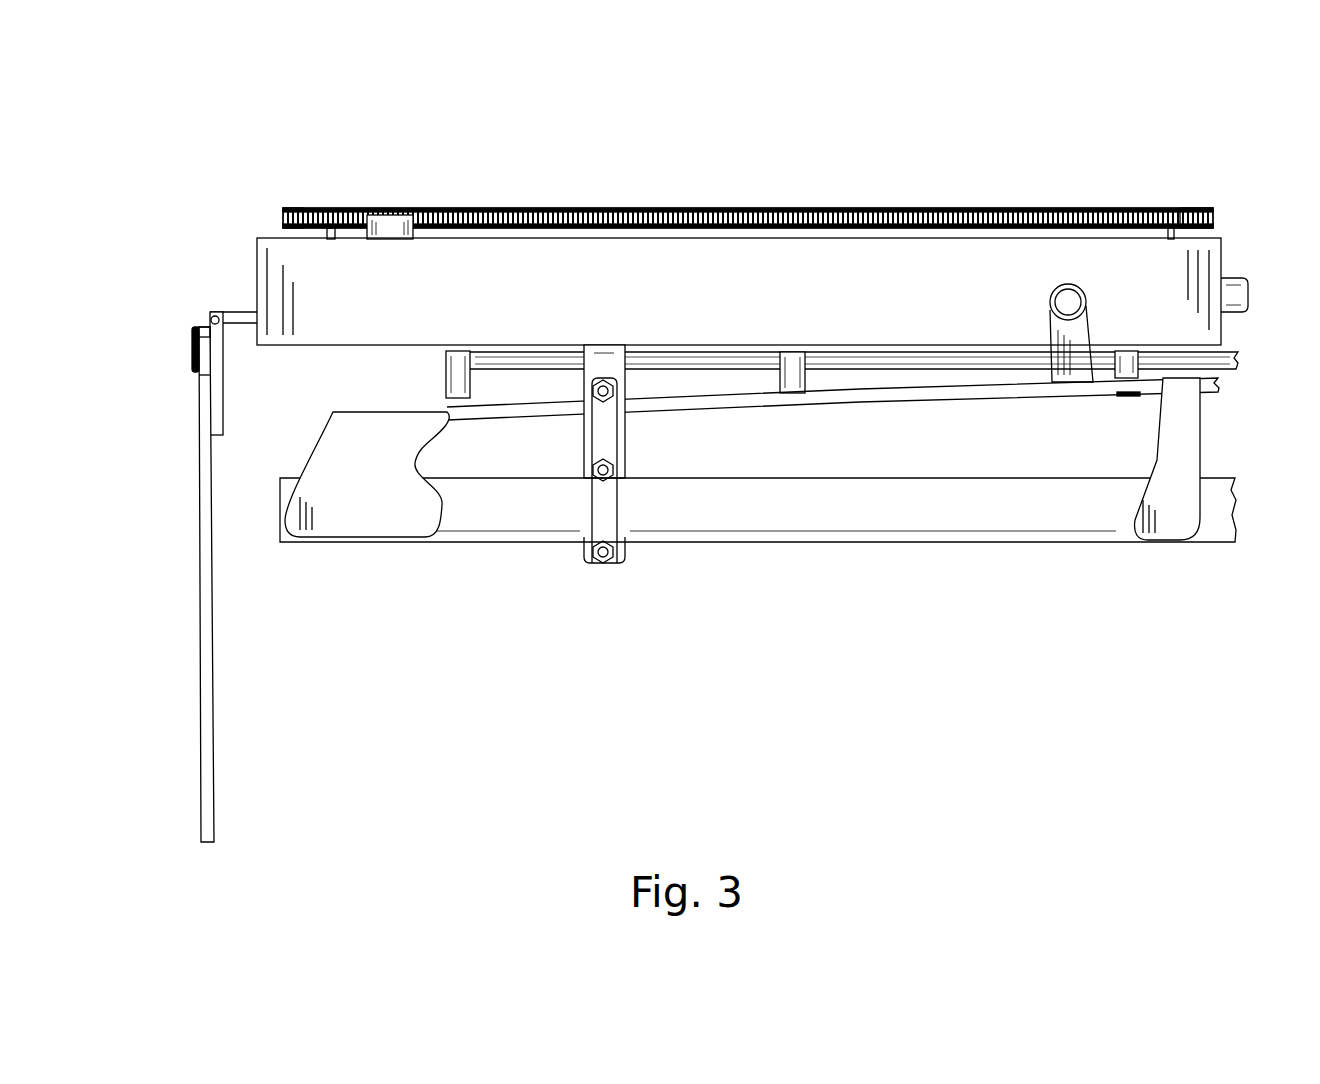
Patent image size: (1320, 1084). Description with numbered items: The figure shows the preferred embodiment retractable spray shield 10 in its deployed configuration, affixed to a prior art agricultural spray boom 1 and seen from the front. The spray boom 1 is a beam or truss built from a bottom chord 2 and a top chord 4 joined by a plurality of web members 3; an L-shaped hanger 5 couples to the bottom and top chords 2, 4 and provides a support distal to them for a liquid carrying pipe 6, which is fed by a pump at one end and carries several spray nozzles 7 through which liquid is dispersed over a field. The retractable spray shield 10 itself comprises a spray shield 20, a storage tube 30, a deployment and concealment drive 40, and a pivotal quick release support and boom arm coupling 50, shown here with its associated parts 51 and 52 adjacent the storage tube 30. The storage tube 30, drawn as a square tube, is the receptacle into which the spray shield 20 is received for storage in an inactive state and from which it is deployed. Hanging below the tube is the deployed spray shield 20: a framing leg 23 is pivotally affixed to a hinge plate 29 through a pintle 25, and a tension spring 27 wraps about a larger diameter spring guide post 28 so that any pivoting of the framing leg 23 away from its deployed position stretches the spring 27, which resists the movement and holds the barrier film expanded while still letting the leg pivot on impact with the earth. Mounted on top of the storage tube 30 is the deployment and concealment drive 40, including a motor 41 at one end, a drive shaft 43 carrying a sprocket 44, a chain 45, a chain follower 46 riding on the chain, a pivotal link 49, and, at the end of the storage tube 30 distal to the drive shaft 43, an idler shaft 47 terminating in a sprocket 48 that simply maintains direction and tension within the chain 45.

The agricultural spray boom 1 is at (802, 550).
The bottom chord 2 is at (1222, 520).
The web members 3 is at (360, 499).
The top chord 4 is at (1015, 395).
The L-shaped hanger 5 is at (615, 370).
The liquid carrying pipe 6 is at (860, 365).
The spray nozzles 7 is at (465, 382).
The retractable spray shield 10 is at (1190, 118).
The spray shield 20 is at (224, 765).
The framing leg 23 is at (205, 681).
The pintle 25 is at (197, 378).
The tension spring 27 is at (193, 350).
The spring guide post 28 is at (204, 330).
The hinge plate 29 is at (222, 418).
The storage tube 30 is at (603, 304).
The deployment and concealment drive 40 is at (364, 186).
The motor 41 is at (1230, 295).
The drive shaft 43 is at (1175, 233).
The sprocket 44 is at (1152, 210).
The chain 45 is at (526, 208).
The chain follower 46 is at (404, 232).
The idler shaft 47 is at (330, 233).
The sprocket 48 is at (292, 208).
The pivotal link 49 is at (246, 318).
The pivotal quick release support and boom arm coupling 50 is at (1005, 291).
The lever arm 51 is at (1036, 295).
The pivot ring 52 is at (1058, 288).